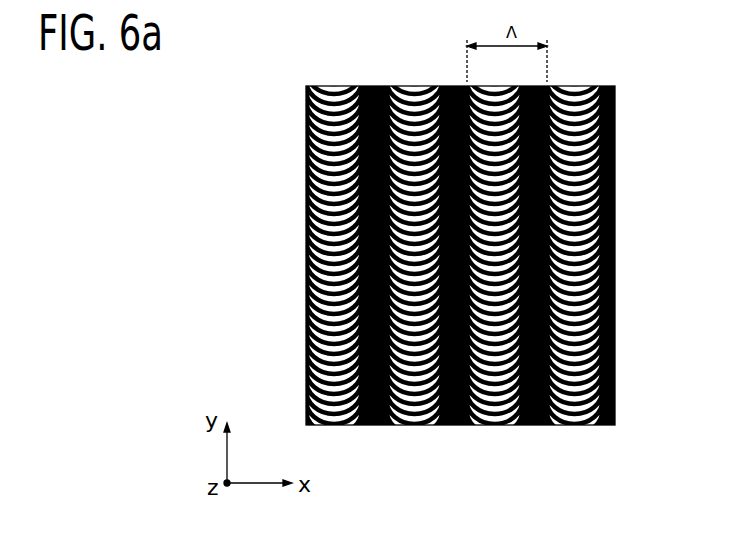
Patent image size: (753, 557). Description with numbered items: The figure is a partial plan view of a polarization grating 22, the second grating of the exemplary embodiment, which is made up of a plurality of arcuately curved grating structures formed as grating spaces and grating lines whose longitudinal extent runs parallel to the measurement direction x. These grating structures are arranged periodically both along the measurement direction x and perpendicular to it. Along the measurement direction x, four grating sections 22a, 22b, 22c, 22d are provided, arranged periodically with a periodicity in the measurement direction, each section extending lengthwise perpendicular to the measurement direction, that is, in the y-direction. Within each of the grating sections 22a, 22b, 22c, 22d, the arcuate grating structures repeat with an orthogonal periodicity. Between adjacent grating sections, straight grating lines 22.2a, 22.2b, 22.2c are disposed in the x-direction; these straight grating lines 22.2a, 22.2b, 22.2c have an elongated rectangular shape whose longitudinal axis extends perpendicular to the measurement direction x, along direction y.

The polarization grating 22 is at (402, 272).
The grating section 22a is at (328, 74).
The grating section 22b is at (418, 74).
The grating section 22c is at (496, 438).
The grating section 22d is at (596, 76).
The straight grating line 22.2a is at (375, 427).
The straight grating line 22.2b is at (455, 427).
The straight grating line 22.2c is at (538, 427).